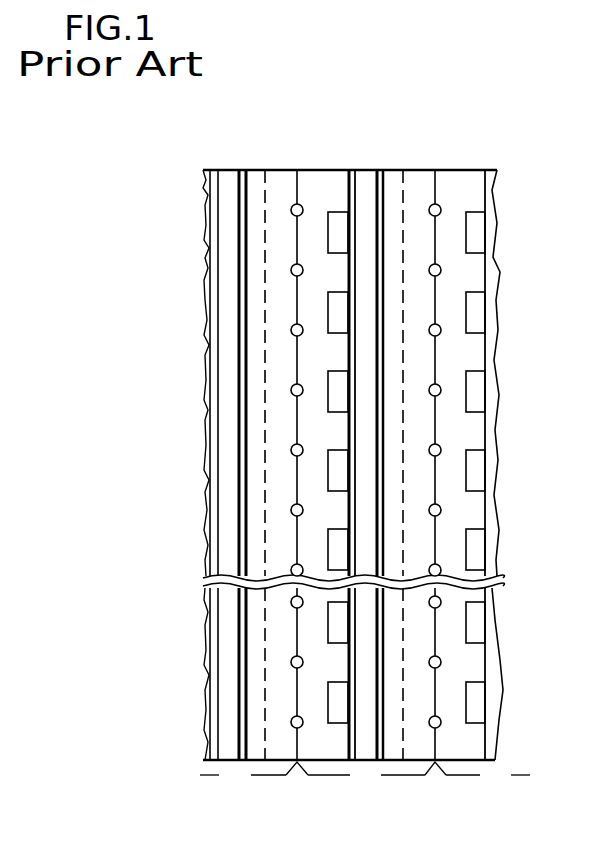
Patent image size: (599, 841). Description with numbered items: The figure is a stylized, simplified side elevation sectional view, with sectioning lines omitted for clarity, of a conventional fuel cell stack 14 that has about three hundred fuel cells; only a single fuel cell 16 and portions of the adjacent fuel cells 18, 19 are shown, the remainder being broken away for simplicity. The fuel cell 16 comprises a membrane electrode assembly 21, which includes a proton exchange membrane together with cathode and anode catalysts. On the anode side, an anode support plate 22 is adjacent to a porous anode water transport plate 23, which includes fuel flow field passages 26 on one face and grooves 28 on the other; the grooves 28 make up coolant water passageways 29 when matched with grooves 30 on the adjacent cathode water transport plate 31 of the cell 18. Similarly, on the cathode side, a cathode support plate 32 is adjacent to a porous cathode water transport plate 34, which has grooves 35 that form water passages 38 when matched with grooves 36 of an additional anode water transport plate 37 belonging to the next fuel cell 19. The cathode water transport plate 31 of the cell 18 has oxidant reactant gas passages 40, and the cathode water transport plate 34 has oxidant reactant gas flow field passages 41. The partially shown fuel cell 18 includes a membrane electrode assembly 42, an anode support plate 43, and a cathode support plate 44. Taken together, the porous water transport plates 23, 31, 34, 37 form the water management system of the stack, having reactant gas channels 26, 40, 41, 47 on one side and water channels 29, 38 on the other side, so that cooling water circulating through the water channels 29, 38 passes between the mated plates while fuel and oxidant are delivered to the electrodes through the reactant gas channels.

The fuel cell stack 14 is at (376, 465).
The fuel cell 16 is at (377, 775).
The adjacent fuel cell 18 is at (254, 775).
The adjacent fuel cell 19 is at (488, 775).
The membrane electrode assembly 21 is at (365, 182).
The anode support plate 22 is at (350, 172).
The porous anode water transport plate 23 is at (314, 186).
The fuel flow field passages 26 is at (338, 234).
The grooves 28 is at (297, 601).
The coolant water passageways 29 is at (302, 508).
The grooves 30 is at (298, 449).
The cathode water transport plate 31 is at (279, 177).
The cathode support plate 32 is at (378, 178).
The porous cathode water transport plate 34 is at (418, 180).
The grooves 35 is at (438, 209).
The grooves 36 is at (431, 268).
The anode water transport plate 37 is at (463, 180).
The water passages 38 is at (437, 336).
The oxidant reactant gas passages 40 is at (258, 172).
The oxidant reactant gas flow field passages 41 is at (391, 190).
The membrane electrode assembly 42 is at (230, 203).
The anode support plate 43 is at (213, 180).
The cathode support plate 44 is at (242, 229).
The reactant gas channels 47 is at (470, 384).